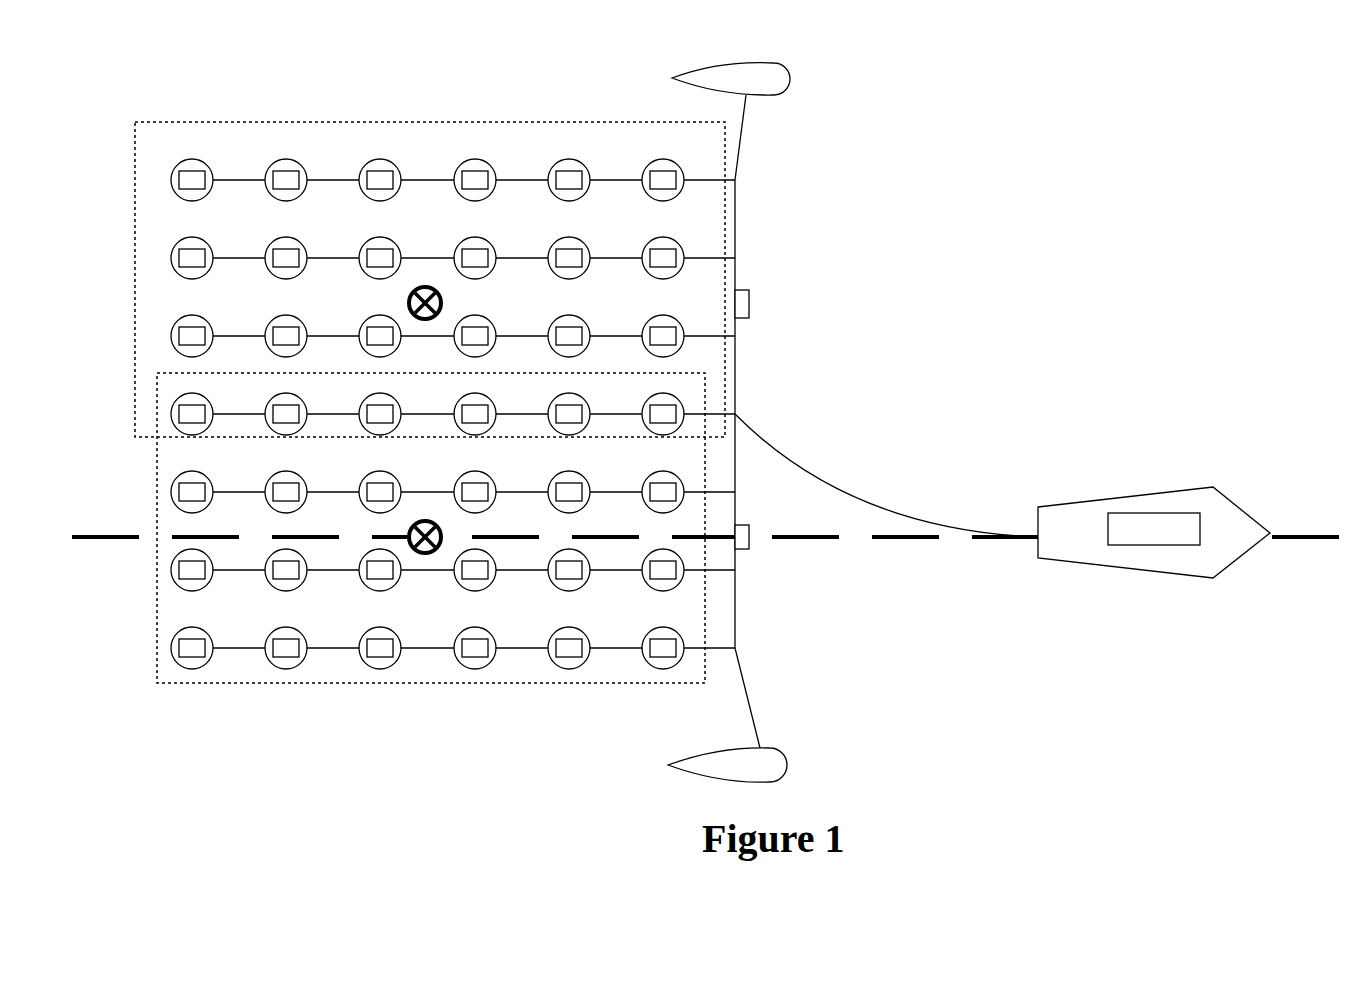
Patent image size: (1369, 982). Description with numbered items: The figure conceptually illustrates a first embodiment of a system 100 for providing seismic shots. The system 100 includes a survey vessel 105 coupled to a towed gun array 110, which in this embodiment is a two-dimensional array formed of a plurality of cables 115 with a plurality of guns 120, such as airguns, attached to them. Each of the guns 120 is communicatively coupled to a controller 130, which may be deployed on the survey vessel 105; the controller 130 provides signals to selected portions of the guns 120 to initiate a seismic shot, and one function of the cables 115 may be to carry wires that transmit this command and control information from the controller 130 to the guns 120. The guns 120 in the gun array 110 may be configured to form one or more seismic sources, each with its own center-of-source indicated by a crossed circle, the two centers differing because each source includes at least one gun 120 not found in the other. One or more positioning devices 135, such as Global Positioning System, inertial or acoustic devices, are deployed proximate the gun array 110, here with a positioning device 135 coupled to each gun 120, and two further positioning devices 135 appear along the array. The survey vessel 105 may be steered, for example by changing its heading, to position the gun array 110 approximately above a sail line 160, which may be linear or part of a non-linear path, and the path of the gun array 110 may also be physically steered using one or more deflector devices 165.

The system 100 is at (1004, 114).
The survey vessel 105 is at (1118, 493).
The gun array 110 is at (422, 808).
The cables 115 is at (335, 180).
The guns 120 is at (475, 158).
The controller 130 is at (1155, 513).
The positioning devices 135 is at (380, 168).
The sail line 160 is at (1313, 542).
The deflector devices 165 is at (778, 67).